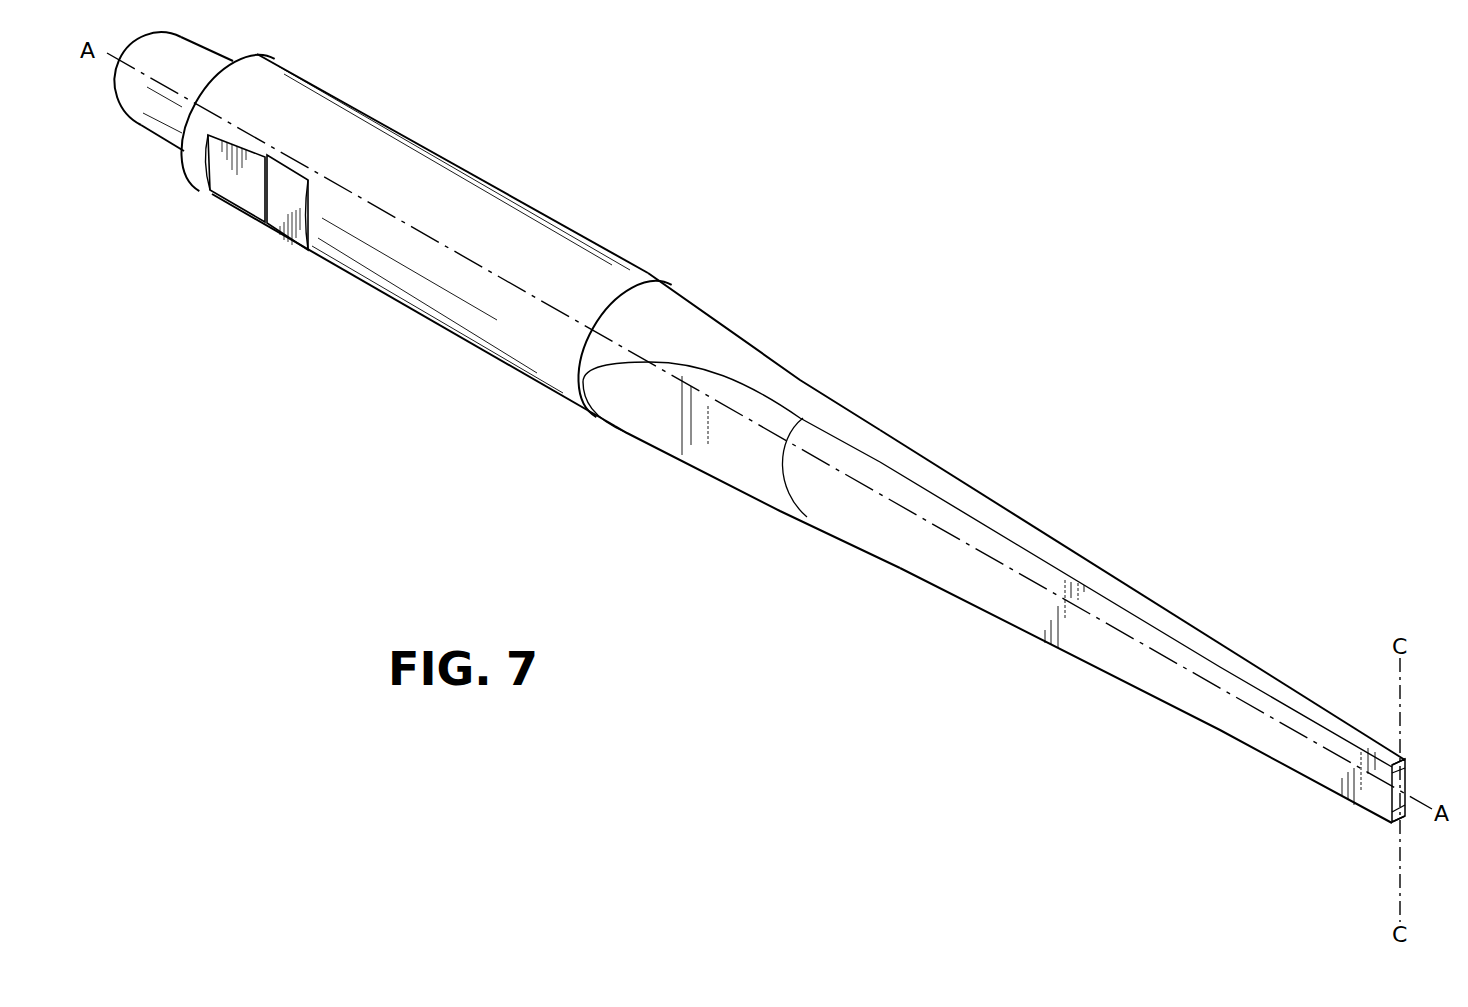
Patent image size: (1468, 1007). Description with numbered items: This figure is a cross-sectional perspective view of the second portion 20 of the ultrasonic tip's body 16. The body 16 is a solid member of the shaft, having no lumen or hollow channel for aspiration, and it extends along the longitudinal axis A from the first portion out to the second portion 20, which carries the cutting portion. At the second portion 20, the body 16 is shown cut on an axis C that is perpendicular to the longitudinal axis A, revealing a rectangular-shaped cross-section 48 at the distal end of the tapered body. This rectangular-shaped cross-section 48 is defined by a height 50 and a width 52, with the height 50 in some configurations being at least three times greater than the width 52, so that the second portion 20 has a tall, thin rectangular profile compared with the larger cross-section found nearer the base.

The body 16 is at (872, 525).
The second portion 20 is at (1164, 659).
The rectangular-shaped cross-section 48 is at (1384, 791).
The height 50 is at (1410, 782).
The width 52 is at (1408, 816).